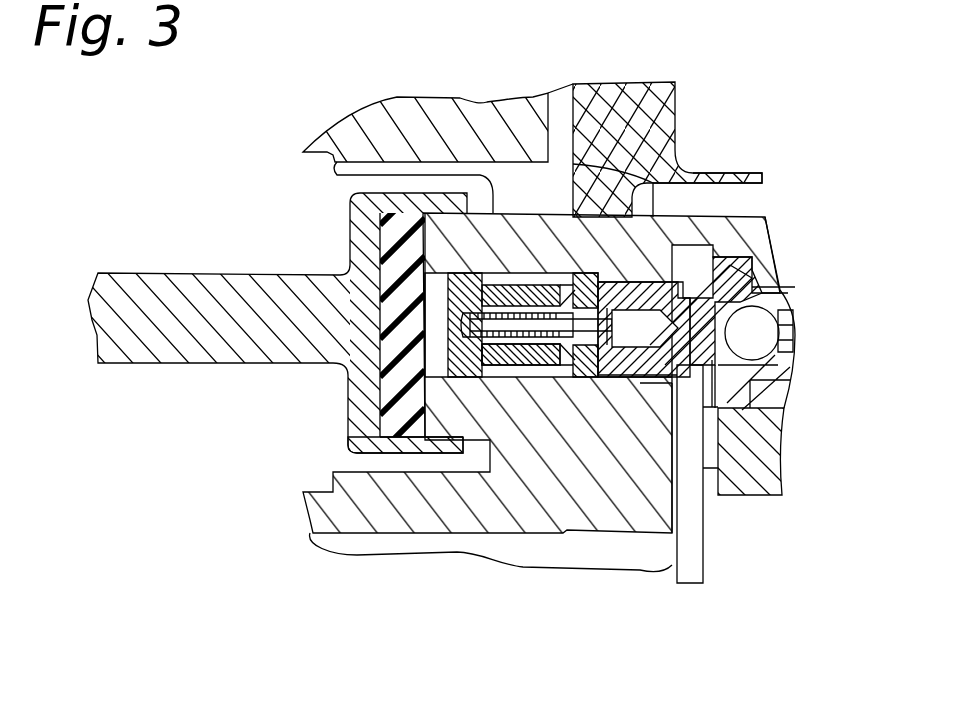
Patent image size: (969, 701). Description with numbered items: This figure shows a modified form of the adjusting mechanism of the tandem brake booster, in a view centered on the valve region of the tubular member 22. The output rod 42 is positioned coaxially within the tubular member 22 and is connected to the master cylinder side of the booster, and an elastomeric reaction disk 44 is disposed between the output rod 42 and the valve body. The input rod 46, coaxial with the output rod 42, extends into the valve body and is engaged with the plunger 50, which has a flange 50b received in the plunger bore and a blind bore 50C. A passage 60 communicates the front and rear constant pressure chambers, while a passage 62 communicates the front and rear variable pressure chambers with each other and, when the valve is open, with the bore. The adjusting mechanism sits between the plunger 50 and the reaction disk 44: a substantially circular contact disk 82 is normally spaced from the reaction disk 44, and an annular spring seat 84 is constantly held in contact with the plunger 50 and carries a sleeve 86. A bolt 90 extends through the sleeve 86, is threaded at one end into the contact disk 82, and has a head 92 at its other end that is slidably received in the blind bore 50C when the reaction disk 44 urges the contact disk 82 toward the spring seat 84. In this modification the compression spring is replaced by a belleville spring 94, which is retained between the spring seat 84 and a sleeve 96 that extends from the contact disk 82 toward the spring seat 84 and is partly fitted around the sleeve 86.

The tubular member 22 is at (470, 130).
The output rod 42 is at (196, 338).
The elastomeric reaction disk 44 is at (393, 240).
The input rod 46 is at (794, 318).
The plunger 50 is at (690, 366).
The flange 50b is at (737, 262).
The blind bore 50C is at (693, 183).
The passage 60 is at (675, 155).
The passage 62 is at (657, 533).
The contact disk 82 is at (458, 380).
The spring seat 84 is at (580, 350).
The sleeve 86 is at (577, 278).
The bolt 90 is at (363, 400).
The head 92 is at (608, 352).
The belleville spring 94 is at (550, 352).
The sleeve 96 is at (514, 370).